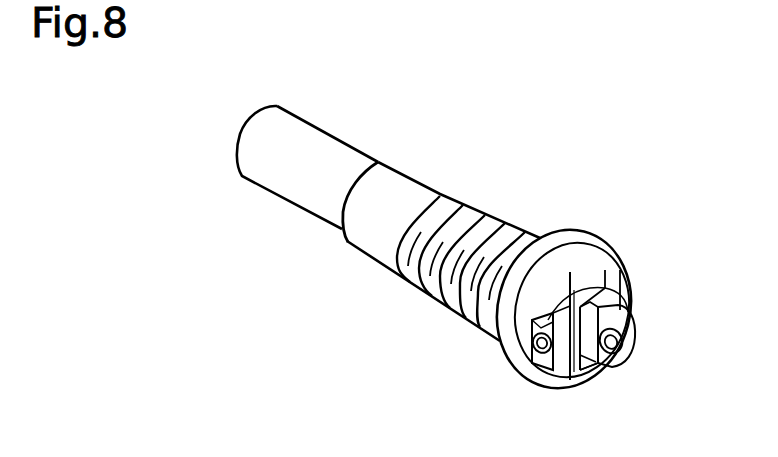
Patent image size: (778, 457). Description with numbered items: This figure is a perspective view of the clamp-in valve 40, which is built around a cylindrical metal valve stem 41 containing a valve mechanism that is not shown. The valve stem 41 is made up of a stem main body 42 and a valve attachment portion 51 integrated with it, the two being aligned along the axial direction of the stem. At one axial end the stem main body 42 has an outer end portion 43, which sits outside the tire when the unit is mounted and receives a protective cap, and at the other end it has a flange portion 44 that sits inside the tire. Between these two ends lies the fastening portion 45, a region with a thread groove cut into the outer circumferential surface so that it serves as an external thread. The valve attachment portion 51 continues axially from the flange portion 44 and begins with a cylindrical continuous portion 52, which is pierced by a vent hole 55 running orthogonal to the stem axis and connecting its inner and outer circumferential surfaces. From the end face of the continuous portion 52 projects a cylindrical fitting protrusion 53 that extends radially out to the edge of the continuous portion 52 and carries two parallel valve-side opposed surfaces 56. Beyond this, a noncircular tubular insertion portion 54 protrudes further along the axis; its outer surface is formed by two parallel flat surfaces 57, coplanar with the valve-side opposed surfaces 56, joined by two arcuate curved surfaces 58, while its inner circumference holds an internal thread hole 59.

The clamp-in valve 40 is at (569, 151).
The valve stem 41 is at (430, 185).
The stem main body 42 is at (377, 263).
The outer end portion 43 is at (322, 123).
The flange portion 44 is at (574, 240).
The fastening portion 45 is at (508, 223).
The valve attachment portion 51 is at (627, 293).
The continuous portion 52 is at (583, 270).
The fitting protrusion 53 is at (578, 377).
The insertion portion 54 is at (630, 325).
The vent hole 55 is at (514, 378).
The valve-side opposed surfaces 56 is at (609, 278).
The flat surfaces 57 is at (628, 344).
The curved surfaces 58 is at (627, 313).
The internal thread hole 59 is at (572, 320).